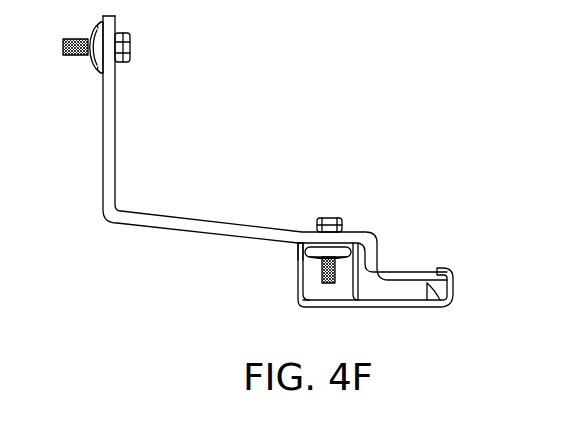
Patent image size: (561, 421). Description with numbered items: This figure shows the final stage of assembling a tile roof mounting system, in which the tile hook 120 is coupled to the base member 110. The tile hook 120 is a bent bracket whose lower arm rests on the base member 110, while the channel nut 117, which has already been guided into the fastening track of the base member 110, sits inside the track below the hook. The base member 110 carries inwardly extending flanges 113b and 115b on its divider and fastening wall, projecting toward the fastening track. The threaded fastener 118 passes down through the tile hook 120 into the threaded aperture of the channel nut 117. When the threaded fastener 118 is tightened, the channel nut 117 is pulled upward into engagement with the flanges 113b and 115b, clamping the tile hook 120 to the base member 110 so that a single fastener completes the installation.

The tile hook 120 is at (199, 154).
The threaded fastener 118 is at (327, 217).
The base member 110 is at (462, 293).
The flange 115b is at (300, 245).
The flange 113b is at (352, 254).
The channel nut 117 is at (308, 258).